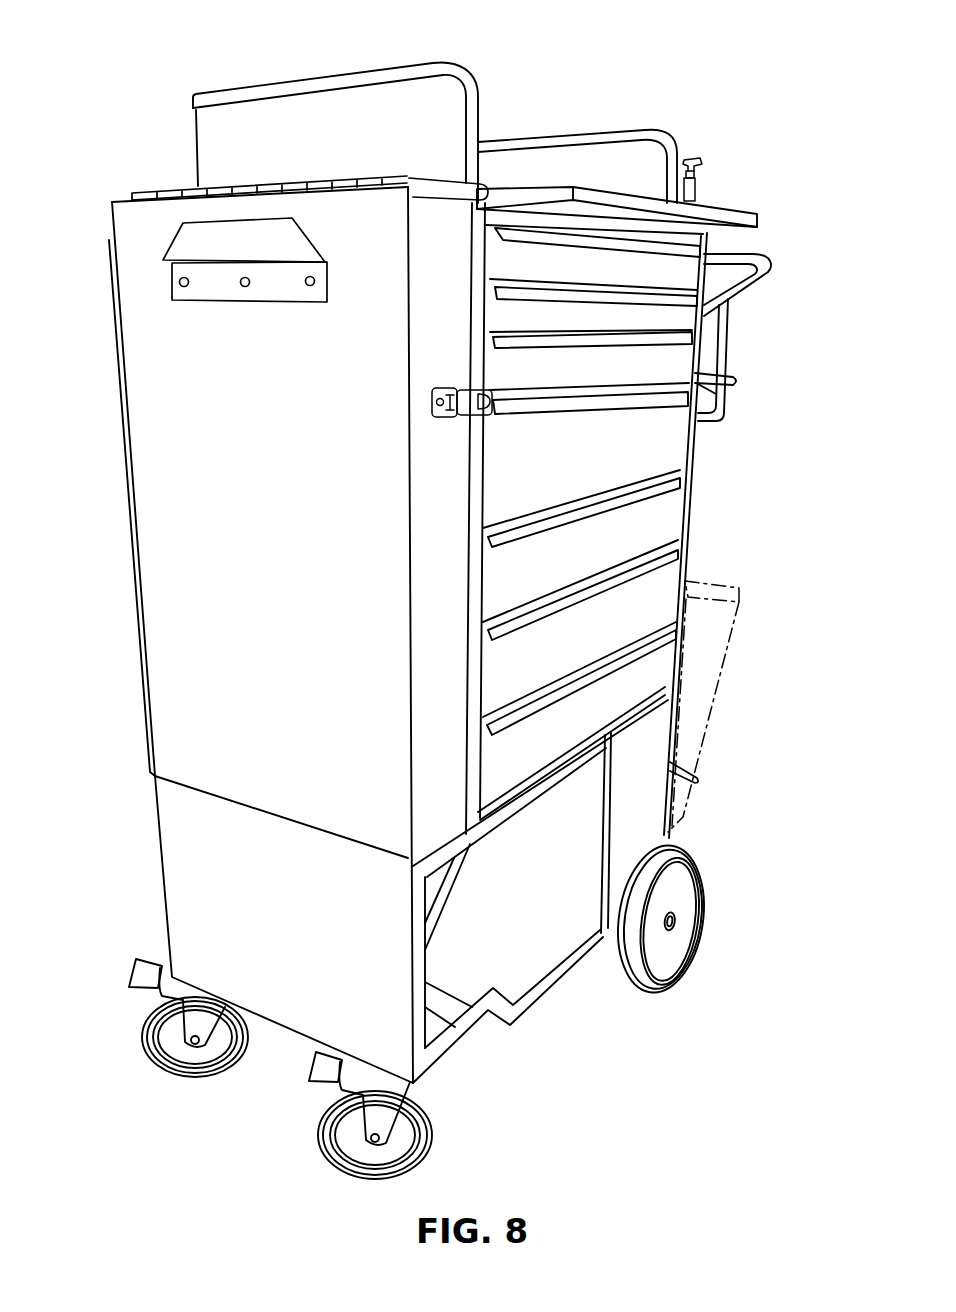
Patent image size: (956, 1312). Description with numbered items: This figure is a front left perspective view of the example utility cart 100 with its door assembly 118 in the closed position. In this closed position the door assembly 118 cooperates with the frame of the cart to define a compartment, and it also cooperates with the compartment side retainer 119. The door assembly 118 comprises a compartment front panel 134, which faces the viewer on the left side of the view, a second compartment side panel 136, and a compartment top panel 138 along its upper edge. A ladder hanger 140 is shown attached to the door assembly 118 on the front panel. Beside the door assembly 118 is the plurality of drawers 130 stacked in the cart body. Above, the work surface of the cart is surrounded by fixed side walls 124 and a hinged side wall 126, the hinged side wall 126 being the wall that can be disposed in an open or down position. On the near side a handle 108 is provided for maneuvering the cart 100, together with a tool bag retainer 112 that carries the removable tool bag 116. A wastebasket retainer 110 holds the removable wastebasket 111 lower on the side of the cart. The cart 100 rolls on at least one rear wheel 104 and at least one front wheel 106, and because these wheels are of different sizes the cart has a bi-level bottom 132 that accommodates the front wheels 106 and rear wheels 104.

The utility cart 100 is at (137, 857).
The rear wheel 104 is at (687, 850).
The front wheel 106 is at (195, 1072).
The handle 108 is at (750, 256).
The wastebasket retainer 110 is at (695, 784).
The removable wastebasket 111 is at (713, 578).
The tool bag retainer 112 is at (729, 302).
The removable tool bag 116 is at (721, 181).
The door assembly 118 is at (138, 694).
The compartment side retainer 119 is at (472, 412).
The fixed side wall 124 is at (239, 92).
The hinged side wall 126 is at (727, 215).
The plurality of drawers 130 is at (654, 451).
The bi-level bottom 132 is at (520, 1024).
The compartment front panel 134 is at (169, 491).
The second compartment side panel 136 is at (457, 228).
The compartment top panel 138 is at (438, 183).
The ladder hanger 140 is at (183, 247).